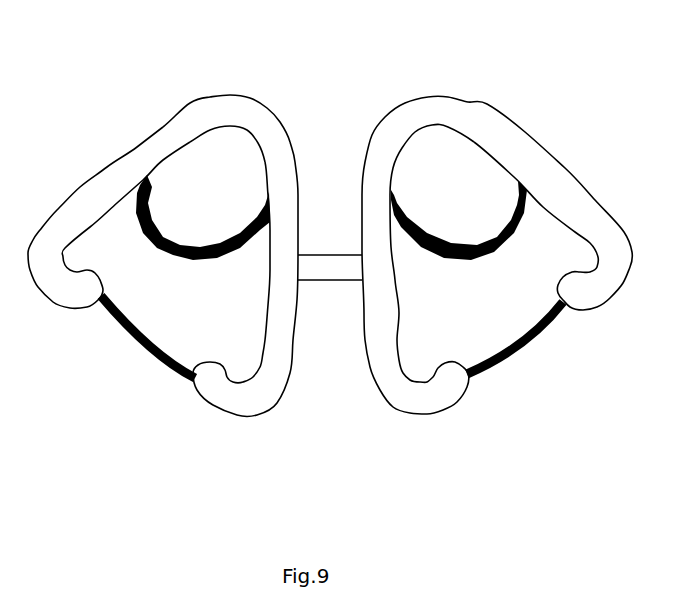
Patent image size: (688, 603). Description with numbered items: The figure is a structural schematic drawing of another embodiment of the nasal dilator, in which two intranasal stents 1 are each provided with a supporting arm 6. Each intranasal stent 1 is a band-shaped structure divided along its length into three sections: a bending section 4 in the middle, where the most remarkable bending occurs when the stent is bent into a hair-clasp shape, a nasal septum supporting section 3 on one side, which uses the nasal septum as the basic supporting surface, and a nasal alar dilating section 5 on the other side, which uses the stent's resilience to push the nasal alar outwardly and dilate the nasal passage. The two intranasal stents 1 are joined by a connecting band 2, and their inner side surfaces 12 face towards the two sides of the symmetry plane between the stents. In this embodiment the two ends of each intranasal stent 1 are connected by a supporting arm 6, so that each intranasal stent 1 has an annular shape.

The intranasal stent 1 is at (330, 272).
The connecting band 2 is at (352, 256).
The nasal septum supporting section 3 is at (280, 337).
The bending section 4 is at (250, 112).
The nasal alar dilating section 5 is at (113, 182).
The supporting arm 6 is at (172, 265).
The inner side surface of intranasal stent 12 is at (400, 158).